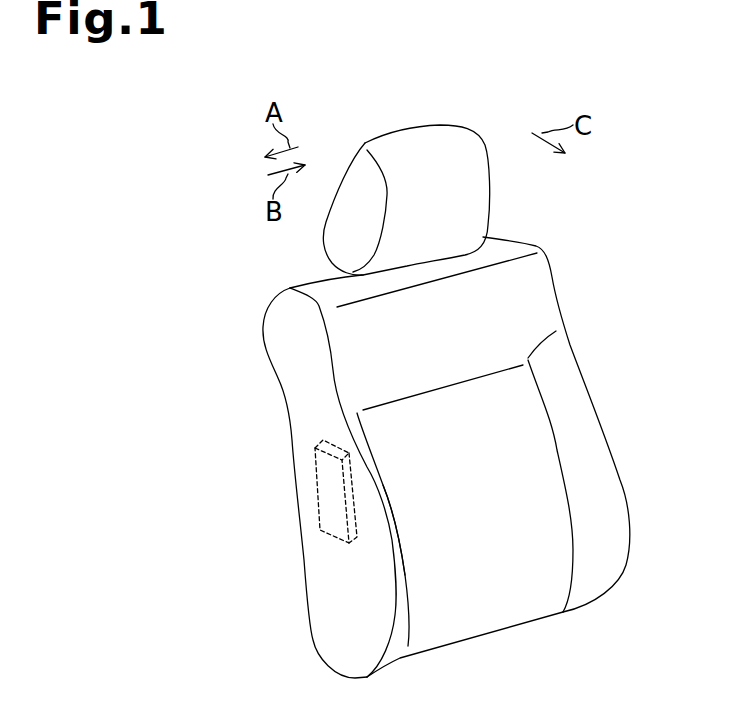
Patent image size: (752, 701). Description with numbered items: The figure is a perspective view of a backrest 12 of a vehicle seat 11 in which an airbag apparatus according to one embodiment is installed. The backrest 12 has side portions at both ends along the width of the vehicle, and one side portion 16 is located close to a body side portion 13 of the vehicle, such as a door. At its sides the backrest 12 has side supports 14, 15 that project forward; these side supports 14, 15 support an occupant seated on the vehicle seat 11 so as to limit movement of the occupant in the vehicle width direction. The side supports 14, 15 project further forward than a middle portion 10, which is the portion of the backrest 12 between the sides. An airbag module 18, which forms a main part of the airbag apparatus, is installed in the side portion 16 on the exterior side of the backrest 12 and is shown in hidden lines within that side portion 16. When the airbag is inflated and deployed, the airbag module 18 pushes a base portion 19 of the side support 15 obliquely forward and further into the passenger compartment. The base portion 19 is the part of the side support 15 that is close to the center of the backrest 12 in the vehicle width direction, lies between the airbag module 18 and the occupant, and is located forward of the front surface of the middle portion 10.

The middle portion 10 is at (463, 463).
The vehicle seat 11 is at (557, 293).
The backrest 12 is at (487, 627).
The body side portion 13 is at (406, 200).
The side support 14 is at (600, 587).
The side support 15 is at (400, 633).
The side portion 16 is at (313, 587).
The airbag module 18 is at (317, 487).
The base portion 19 is at (410, 540).